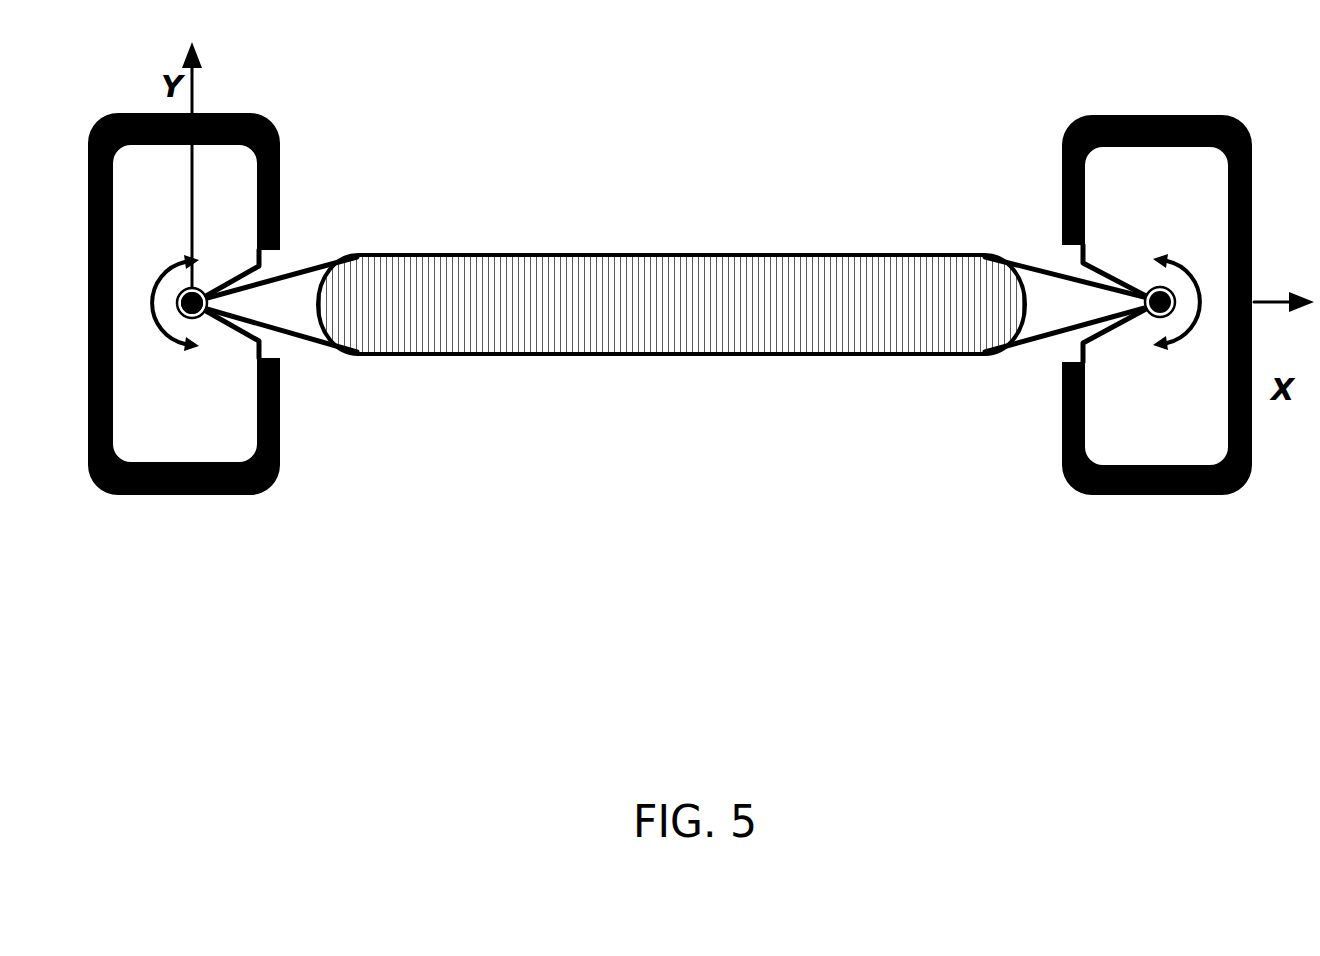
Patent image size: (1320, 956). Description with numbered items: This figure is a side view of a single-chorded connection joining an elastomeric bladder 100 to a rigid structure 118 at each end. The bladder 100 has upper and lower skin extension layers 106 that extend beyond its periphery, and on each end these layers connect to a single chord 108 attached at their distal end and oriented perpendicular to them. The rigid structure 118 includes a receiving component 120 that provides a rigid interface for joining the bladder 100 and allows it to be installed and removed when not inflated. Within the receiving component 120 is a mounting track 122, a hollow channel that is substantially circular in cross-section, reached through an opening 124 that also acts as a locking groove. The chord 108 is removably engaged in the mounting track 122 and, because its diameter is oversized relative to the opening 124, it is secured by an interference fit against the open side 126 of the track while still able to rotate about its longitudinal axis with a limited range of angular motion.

The elastomeric bladder 100 is at (733, 222).
The skin extension layers 106 is at (295, 273).
The chord 108 is at (192, 318).
The rigid structure 118 is at (183, 495).
The receiving component 120 is at (173, 232).
The mounting track 122 is at (203, 288).
The opening 124 is at (296, 354).
The open side 126 is at (205, 314).